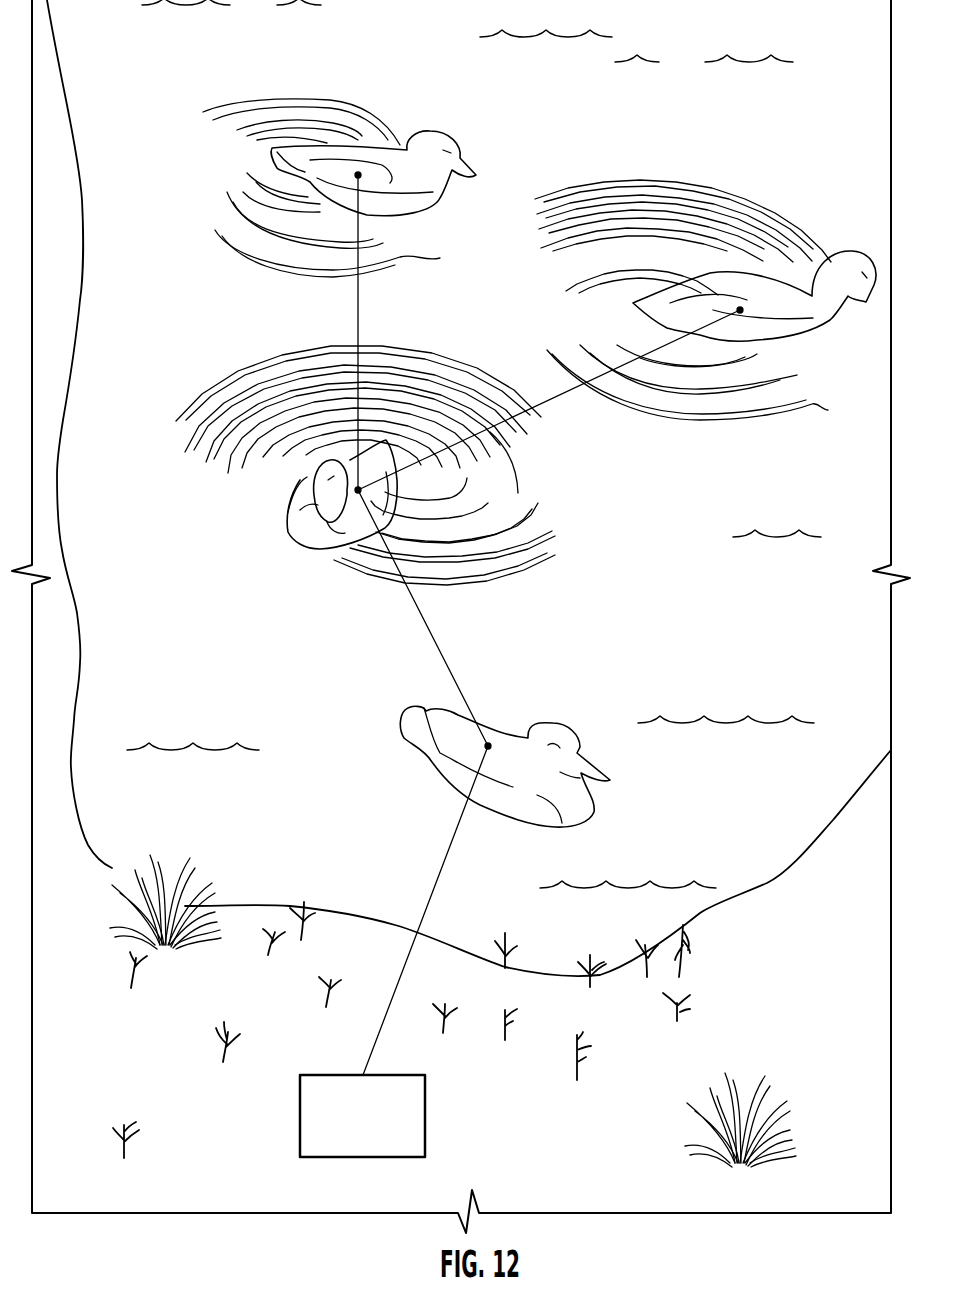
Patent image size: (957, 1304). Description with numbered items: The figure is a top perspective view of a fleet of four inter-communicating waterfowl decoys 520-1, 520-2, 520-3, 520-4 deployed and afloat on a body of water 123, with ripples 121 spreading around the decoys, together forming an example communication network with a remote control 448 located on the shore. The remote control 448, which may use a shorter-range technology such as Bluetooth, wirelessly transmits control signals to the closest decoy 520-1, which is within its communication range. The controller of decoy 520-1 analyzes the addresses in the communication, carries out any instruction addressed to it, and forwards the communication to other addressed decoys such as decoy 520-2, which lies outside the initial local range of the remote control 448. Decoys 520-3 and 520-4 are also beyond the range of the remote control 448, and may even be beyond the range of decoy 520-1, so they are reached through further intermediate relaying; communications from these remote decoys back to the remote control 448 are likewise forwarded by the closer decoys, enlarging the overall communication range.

The ripples / wake 121 is at (272, 108).
The body of water 123 is at (147, 773).
The remote control 448 is at (426, 1133).
The waterfowl decoy 520-1 is at (533, 715).
The waterfowl decoy 520-2 is at (298, 500).
The waterfowl decoy 520-3 is at (373, 150).
The waterfowl decoy 520-4 is at (752, 272).